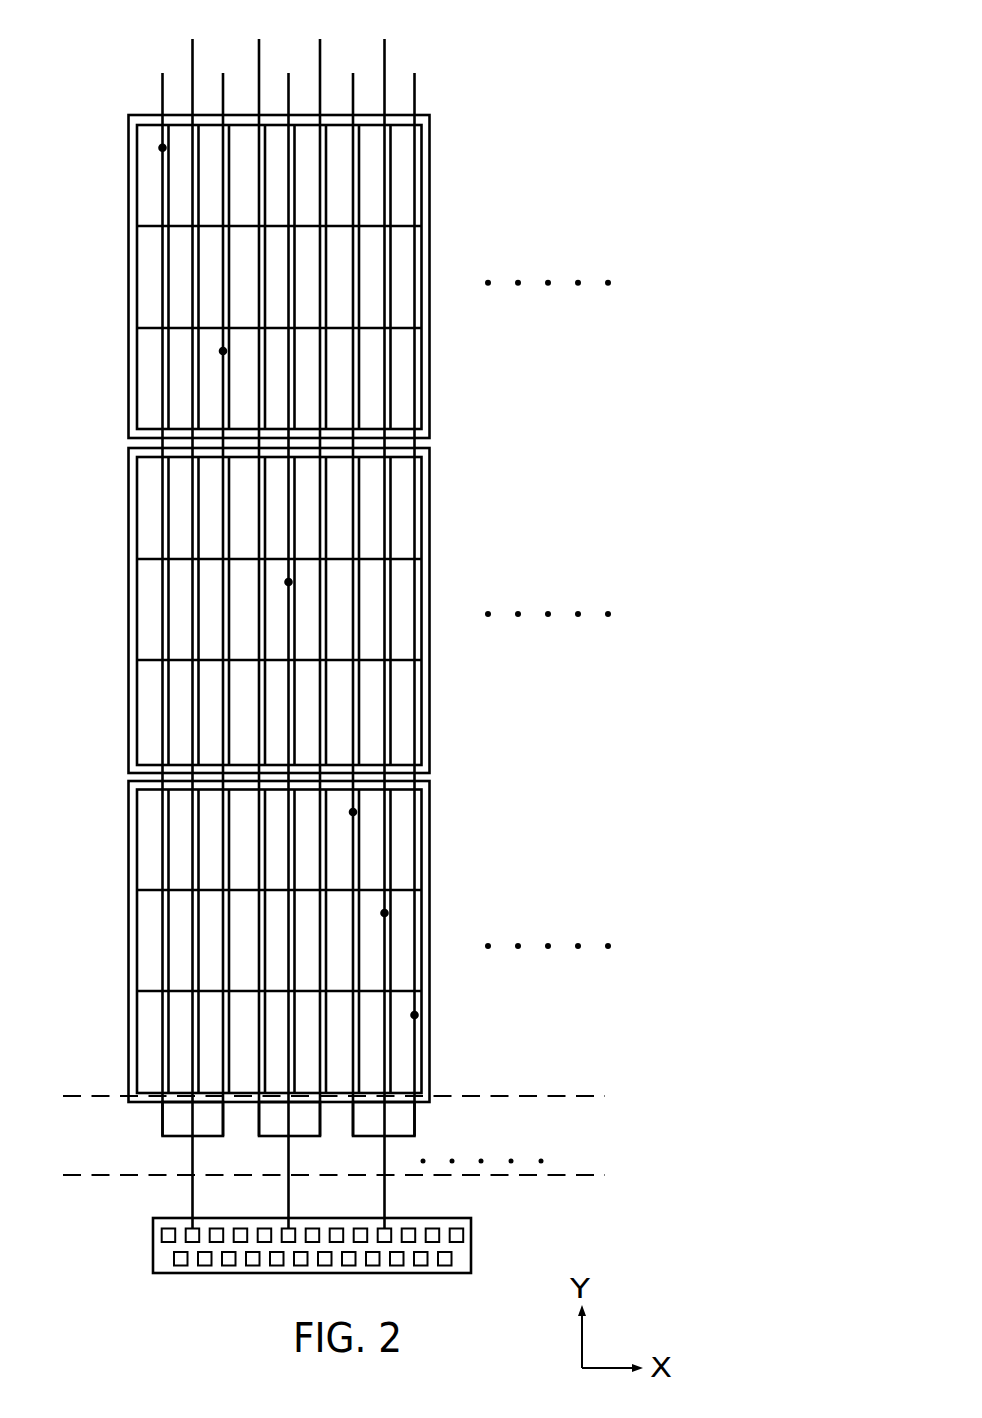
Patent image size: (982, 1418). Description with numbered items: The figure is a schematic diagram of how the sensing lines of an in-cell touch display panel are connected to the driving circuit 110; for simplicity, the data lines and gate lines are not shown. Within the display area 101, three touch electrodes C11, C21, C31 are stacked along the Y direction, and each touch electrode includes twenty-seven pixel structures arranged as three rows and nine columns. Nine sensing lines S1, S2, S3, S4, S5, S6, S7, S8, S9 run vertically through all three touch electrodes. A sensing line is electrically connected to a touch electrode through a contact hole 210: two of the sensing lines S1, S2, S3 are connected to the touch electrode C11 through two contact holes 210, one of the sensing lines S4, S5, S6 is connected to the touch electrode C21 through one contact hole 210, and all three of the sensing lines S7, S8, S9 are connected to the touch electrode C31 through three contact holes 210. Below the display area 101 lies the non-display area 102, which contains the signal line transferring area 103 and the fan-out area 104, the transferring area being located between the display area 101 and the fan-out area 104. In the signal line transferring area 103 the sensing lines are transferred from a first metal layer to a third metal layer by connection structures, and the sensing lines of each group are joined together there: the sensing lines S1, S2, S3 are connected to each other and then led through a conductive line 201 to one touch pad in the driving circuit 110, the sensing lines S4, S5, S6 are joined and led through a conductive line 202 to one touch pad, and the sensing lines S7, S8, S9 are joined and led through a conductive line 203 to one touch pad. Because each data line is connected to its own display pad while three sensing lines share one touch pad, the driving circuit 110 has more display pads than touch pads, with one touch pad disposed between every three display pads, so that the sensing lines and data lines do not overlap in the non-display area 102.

The display area 101 is at (320, 614).
The non-display area 102 is at (417, 1156).
The signal line transferring area 103 is at (562, 1128).
The fan-out area 104 is at (562, 1197).
The driving circuit 110 is at (153, 1247).
The conductive line 201 is at (192, 1150).
The conductive line 202 is at (287, 1148).
The conductive line 203 is at (383, 1147).
The contact hole 210 is at (162, 147).
The touch electrode C11 is at (128, 177).
The touch electrode C21 is at (128, 525).
The touch electrode C31 is at (128, 848).
The sensing line S1 is at (161, 586).
The sensing line S2 is at (191, 614).
The sensing line S3 is at (222, 586).
The sensing line S4 is at (258, 568).
The sensing line S5 is at (287, 632).
The sensing line S6 is at (319, 568).
The sensing line S7 is at (352, 586).
The sensing line S8 is at (383, 614).
The sensing line S9 is at (413, 586).